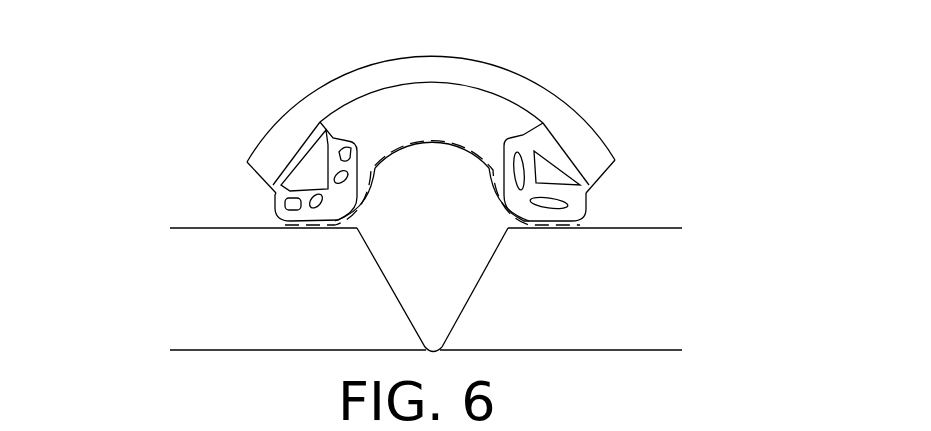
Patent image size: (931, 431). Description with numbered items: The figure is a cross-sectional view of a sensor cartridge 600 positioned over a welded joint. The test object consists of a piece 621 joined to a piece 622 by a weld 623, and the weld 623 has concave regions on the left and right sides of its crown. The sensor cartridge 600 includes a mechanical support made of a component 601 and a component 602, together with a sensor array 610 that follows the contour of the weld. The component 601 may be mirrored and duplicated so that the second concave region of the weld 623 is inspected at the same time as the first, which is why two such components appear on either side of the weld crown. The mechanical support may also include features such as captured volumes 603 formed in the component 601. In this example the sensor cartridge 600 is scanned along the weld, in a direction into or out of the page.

The sensor cartridge 600 is at (391, 133).
The component 601 is at (430, 171).
The component 602 is at (296, 96).
The captured volumes 603 is at (274, 208).
The sensor array 610 is at (592, 220).
The piece 621 is at (150, 279).
The piece 622 is at (692, 277).
The weld 623 is at (460, 135).